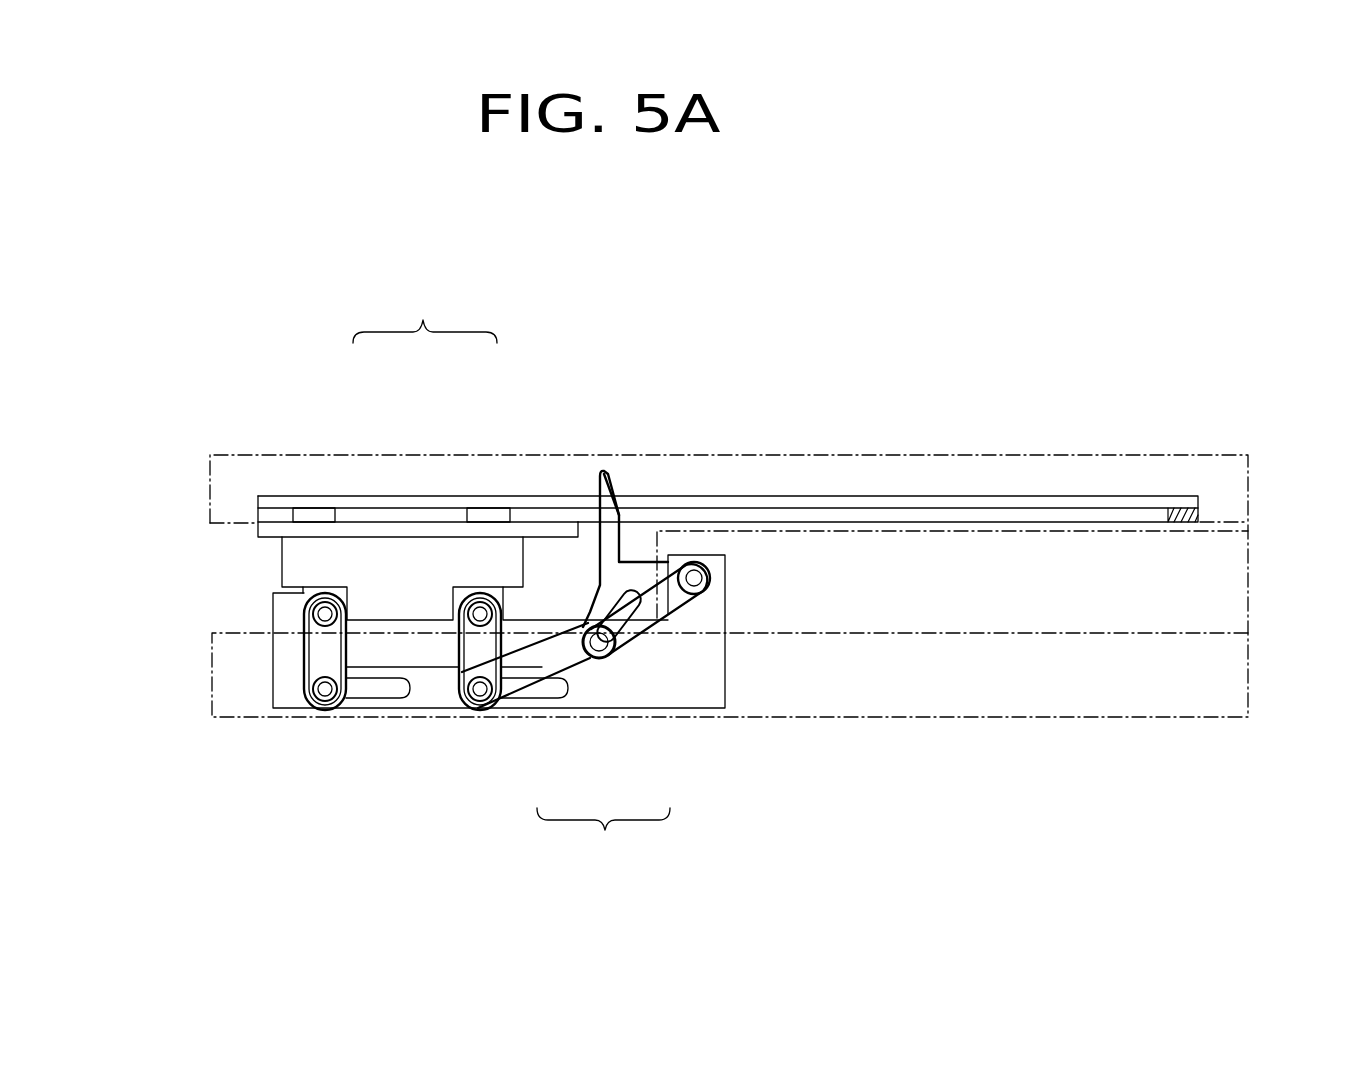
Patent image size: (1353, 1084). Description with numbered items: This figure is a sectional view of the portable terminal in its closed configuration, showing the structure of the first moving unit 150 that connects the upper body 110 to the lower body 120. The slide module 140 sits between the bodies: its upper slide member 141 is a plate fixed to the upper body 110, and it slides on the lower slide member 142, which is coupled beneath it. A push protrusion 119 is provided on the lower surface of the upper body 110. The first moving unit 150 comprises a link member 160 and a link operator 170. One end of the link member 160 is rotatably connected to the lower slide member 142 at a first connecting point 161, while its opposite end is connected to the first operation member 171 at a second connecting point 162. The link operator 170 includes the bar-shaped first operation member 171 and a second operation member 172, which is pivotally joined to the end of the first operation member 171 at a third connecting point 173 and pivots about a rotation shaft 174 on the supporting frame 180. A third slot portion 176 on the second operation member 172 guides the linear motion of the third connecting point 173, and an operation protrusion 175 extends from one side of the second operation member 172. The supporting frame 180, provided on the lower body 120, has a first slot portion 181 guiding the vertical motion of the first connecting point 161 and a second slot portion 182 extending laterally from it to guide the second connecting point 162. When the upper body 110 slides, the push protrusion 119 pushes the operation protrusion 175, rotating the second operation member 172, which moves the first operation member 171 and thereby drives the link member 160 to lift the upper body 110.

The upper body 110 is at (1015, 455).
The push protrusion 119 is at (1175, 510).
The lower body 120 is at (1015, 717).
The slide module 140 is at (425, 315).
The upper slide member 141 is at (728, 434).
The lower slide member 142 is at (383, 535).
The first moving unit 150 is at (740, 637).
The link member 160 is at (350, 705).
The first connecting point 161 is at (312, 613).
The second connecting point 162 is at (312, 687).
The link operator 170 is at (617, 604).
The first operation member 171 is at (609, 579).
The second operation member 172 is at (617, 579).
The third connecting point 173 is at (593, 632).
The rotation shaft 174 is at (694, 578).
The operation protrusion 175 is at (617, 503).
The third slot portion 176 is at (620, 610).
The supporting frame 180 is at (700, 687).
The first slot portion 181 is at (320, 651).
The second slot portion 182 is at (392, 694).